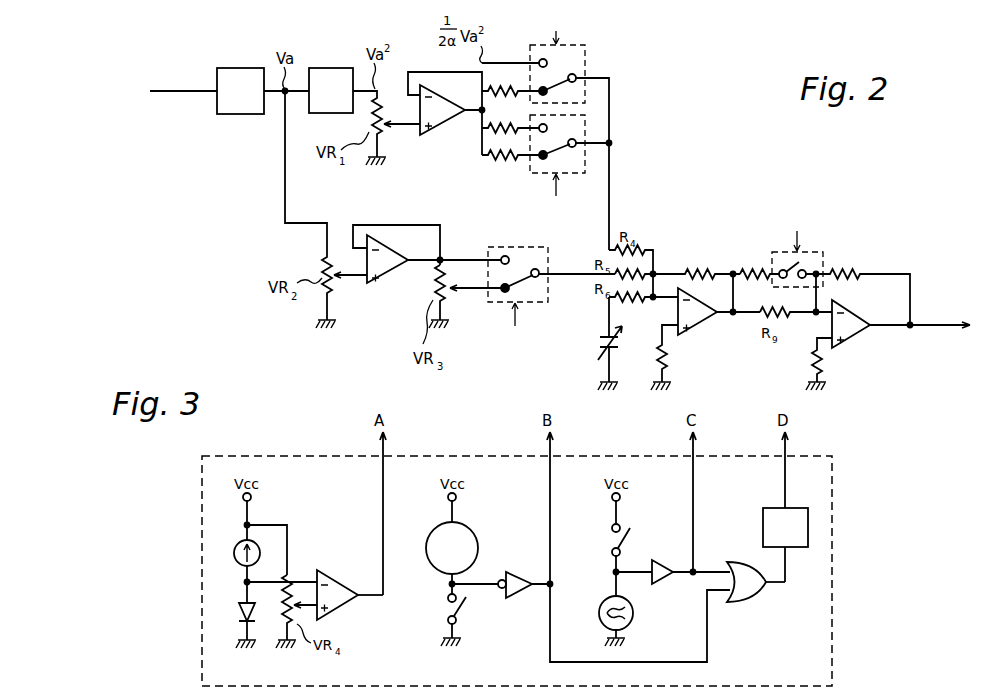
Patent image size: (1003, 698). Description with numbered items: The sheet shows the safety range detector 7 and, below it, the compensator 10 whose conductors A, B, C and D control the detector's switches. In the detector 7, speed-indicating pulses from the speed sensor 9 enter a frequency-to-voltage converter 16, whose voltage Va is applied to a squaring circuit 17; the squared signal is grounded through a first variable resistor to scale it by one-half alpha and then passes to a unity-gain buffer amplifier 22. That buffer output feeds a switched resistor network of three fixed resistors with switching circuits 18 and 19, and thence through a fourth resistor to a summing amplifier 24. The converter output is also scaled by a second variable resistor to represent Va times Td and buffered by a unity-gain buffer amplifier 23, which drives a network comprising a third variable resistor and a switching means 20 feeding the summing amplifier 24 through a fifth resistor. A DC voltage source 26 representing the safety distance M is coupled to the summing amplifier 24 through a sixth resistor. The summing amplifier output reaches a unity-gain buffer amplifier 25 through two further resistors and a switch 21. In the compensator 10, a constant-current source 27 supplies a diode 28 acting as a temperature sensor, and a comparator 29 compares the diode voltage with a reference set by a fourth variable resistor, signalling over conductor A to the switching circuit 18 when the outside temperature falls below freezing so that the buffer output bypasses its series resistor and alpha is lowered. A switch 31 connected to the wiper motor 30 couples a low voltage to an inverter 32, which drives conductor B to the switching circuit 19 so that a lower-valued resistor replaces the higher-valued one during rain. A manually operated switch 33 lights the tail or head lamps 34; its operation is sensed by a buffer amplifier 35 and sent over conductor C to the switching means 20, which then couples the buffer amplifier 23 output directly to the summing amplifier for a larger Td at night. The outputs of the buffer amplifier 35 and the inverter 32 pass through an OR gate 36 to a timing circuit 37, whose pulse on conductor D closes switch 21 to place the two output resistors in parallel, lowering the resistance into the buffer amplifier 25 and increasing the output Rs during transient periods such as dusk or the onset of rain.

In FIG. 2, the safety range detector 7 is at (696, 105).
In FIG. 2, the speed sensor 9 is at (126, 89).
In FIG. 3, the compensator 10 is at (832, 630).
In FIG. 2, the frequency-to-voltage converter 16 is at (247, 68).
In FIG. 2, the squaring circuit 17 is at (327, 68).
In FIG. 2, the switching circuit 18 is at (585, 60).
In FIG. 2, the switching circuit 19 is at (528, 176).
In FIG. 2, the switching means 20 is at (548, 250).
In FIG. 2, the switch 21 is at (823, 256).
In FIG. 2, the unity-gain buffer amplifier 22 is at (454, 126).
In FIG. 2, the unity-gain buffer amplifier 23 is at (385, 272).
In FIG. 2, the summing amplifier 24 is at (705, 330).
In FIG. 2, the unity-gain buffer amplifier 25 is at (857, 342).
In FIG. 2, the DC voltage source 26 is at (602, 348).
In FIG. 3, the constant-current source 27 is at (235, 552).
In FIG. 3, the diode 28 is at (239, 618).
In FIG. 3, the comparator 29 is at (348, 579).
In FIG. 3, the motor 30 is at (478, 549).
In FIG. 3, the switch 31 is at (444, 614).
In FIG. 3, the inverter 32 is at (519, 594).
In FIG. 3, the switch 33 is at (606, 548).
In FIG. 3, the tail or head lamps 34 is at (599, 616).
In FIG. 3, the buffer amplifier 35 is at (665, 560).
In FIG. 3, the OR gate 36 is at (748, 602).
In FIG. 3, the timing circuit 37 is at (763, 533).